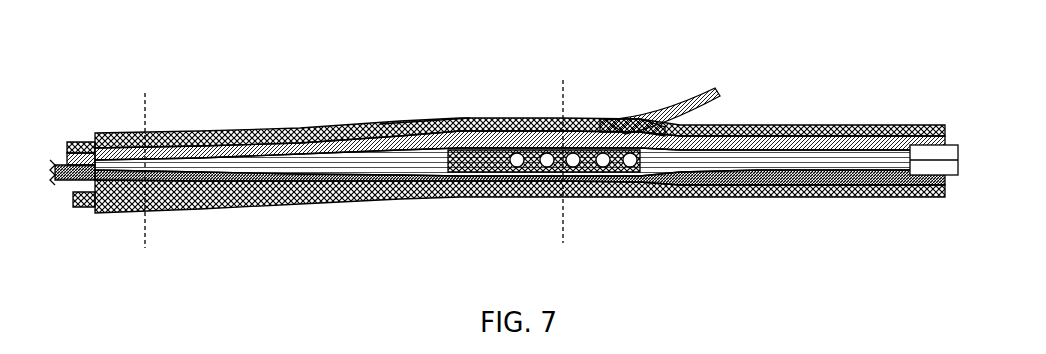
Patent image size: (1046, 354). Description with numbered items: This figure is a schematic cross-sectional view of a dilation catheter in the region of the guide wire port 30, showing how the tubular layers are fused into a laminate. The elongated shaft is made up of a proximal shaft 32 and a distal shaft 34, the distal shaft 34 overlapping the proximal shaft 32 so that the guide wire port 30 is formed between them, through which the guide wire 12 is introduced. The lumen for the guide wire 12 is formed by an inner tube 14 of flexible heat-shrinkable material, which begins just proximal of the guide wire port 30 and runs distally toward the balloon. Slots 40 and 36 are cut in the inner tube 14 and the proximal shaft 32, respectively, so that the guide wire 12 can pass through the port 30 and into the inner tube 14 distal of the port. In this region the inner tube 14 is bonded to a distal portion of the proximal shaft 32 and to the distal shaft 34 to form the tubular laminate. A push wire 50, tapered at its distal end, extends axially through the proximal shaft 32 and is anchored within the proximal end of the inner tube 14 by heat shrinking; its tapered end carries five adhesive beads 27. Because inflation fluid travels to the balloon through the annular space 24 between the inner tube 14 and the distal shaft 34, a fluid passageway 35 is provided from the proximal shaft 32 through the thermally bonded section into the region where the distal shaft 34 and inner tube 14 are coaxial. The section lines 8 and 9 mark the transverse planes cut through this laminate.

The section line 8- 8 is at (122, 101).
The section line 9- 9 is at (540, 89).
The guide wire 12 is at (717, 97).
The inner tube 14 is at (178, 158).
The annular space 24 is at (90, 198).
The adhesive beads 27 is at (635, 167).
The guide wire port 30 is at (610, 123).
The proximal shaft 32 is at (258, 145).
The distal shaft 34 is at (423, 123).
The fluid passageway 35 is at (443, 177).
The slot 36 is at (400, 152).
The slot 40 is at (448, 160).
The push wire 50 is at (935, 167).